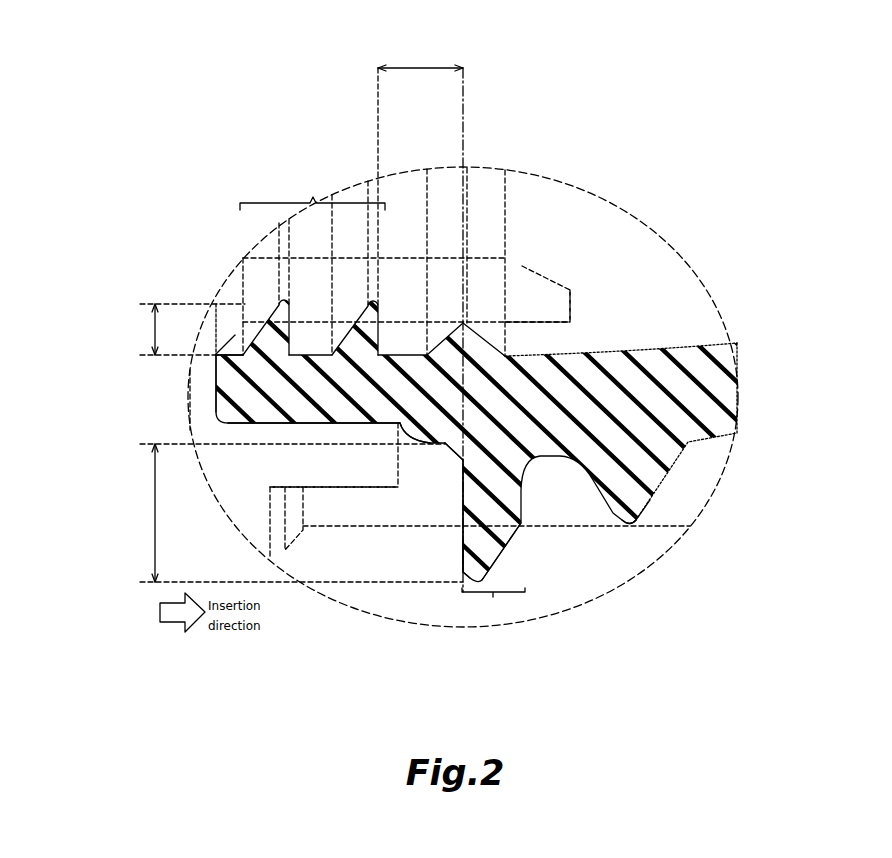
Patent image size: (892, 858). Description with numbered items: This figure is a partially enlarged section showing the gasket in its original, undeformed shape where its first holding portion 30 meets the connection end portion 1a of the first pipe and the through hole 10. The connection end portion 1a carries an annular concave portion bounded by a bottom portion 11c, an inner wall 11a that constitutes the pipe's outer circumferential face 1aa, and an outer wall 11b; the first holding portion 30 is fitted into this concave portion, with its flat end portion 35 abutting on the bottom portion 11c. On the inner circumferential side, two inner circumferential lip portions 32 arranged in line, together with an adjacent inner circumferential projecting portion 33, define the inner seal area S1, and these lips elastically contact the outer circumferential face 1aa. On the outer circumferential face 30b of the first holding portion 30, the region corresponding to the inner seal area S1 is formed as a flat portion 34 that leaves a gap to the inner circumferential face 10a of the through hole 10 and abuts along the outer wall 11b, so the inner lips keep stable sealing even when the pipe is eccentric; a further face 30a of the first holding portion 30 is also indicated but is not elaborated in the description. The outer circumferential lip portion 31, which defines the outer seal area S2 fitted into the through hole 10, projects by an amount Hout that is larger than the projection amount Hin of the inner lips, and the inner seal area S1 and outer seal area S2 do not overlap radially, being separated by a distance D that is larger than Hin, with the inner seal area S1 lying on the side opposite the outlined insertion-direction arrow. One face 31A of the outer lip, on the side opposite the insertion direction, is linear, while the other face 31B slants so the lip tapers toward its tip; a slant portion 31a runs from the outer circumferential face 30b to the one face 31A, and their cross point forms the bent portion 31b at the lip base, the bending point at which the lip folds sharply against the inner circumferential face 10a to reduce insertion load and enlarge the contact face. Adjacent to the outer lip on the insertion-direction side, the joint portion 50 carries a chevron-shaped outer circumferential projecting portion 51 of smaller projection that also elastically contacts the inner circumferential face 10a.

The first holding portion 30 is at (280, 690).
The upper surface of seal member 30a is at (212, 277).
The outer circumferential face 30b is at (247, 473).
The outer circumferential lip portion 31 is at (496, 556).
The slant portion 31a is at (458, 458).
The bent portion 31b is at (462, 475).
The one face 31A is at (456, 538).
The other face 31B is at (524, 536).
The inner circumferential lip portion 32 is at (368, 301).
The inner circumferential projecting portion 33 is at (470, 322).
The flat portion 34 is at (317, 423).
The end portion 35 is at (213, 388).
The joint portion 50 is at (709, 334).
The outer circumferential projecting portion 51 is at (628, 524).
The through hole 10 is at (710, 474).
The inner circumferential face 10a is at (683, 512).
The inner wall 11a is at (522, 265).
The outer wall 11b is at (342, 468).
The bottom portion 11c is at (193, 408).
The connection end portion 1a is at (573, 300).
The outer circumferential face 1aa is at (548, 323).
The distance D is at (424, 66).
The inner seal area S1 is at (312, 191).
The outer seal area S2 is at (493, 604).
The projection amount of inner circumferential lip portion Hin is at (152, 332).
The projection amount of outer circumferential lip portion Hout is at (152, 508).